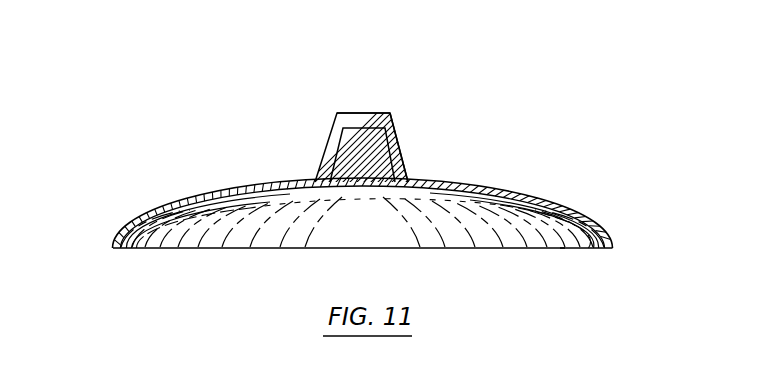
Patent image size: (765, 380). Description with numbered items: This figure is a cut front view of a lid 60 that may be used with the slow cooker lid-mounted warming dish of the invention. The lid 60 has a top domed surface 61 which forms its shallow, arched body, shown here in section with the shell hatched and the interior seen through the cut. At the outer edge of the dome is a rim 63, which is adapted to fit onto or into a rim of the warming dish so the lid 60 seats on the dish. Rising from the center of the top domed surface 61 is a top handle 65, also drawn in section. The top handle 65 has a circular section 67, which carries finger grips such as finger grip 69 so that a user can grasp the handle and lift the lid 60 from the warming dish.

The lid 60 is at (552, 184).
The top domed surface 61 is at (197, 190).
The rim 63 is at (562, 248).
The top handle 65 is at (316, 131).
The circular section 67 is at (389, 114).
The finger grip 69 is at (358, 114).